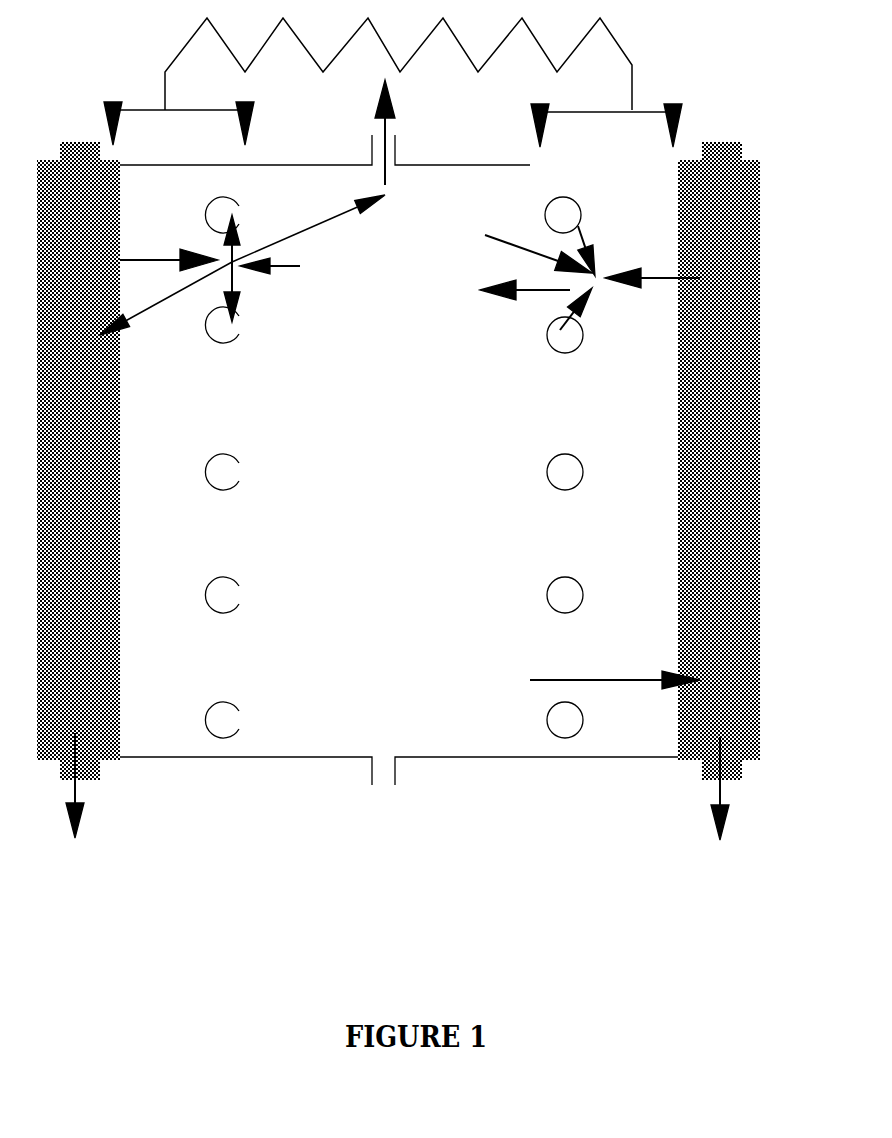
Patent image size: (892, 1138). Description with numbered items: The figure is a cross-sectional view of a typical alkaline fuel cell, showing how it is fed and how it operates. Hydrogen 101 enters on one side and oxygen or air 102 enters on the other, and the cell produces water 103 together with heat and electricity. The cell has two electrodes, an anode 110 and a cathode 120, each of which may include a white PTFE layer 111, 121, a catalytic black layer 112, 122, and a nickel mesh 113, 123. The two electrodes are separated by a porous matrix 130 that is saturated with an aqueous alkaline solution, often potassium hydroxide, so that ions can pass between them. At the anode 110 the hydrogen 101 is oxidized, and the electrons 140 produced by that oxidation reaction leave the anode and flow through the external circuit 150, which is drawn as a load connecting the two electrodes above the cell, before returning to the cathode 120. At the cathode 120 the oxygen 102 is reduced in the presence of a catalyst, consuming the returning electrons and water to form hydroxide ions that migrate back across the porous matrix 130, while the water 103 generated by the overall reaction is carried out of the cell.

The hydrogen 101 is at (75, 160).
The oxygen (or air) 102 is at (725, 160).
The water 103 is at (615, 669).
The anode 110 is at (242, 420).
The white PTFE layer 111 is at (186, 461).
The catalytic black layer 112 is at (202, 752).
The nickel mesh 113 is at (244, 623).
The cathode 120 is at (569, 421).
The white PTFE layer 121 is at (610, 461).
The catalytic black layer 122 is at (582, 762).
The nickel mesh 123 is at (550, 619).
The porous matrix 130 is at (400, 461).
The electrons 140 is at (346, 130).
The circuit 150 is at (398, 64).